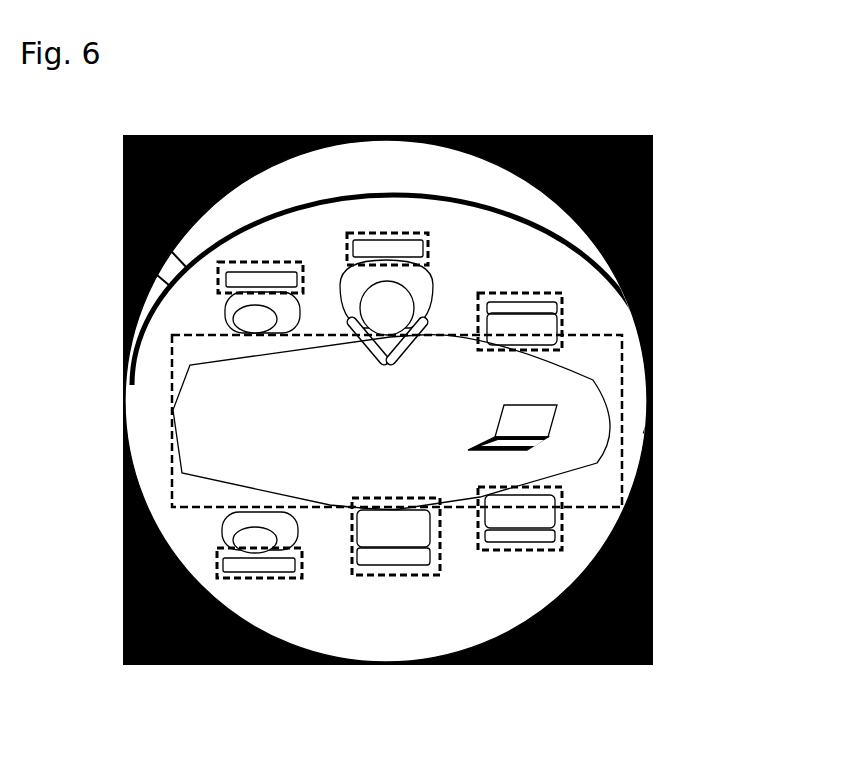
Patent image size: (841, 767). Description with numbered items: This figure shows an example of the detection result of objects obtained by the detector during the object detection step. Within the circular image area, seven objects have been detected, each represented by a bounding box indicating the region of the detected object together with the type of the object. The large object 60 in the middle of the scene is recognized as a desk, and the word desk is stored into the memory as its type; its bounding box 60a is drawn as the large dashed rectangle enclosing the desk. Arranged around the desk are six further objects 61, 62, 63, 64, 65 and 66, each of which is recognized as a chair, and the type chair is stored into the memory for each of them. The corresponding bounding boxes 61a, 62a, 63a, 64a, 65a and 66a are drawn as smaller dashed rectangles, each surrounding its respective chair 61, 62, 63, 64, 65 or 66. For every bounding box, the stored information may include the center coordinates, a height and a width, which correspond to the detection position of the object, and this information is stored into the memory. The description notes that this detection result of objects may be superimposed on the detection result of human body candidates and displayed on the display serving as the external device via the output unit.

The object (desk) 60 is at (603, 428).
The bounding box of the object 60 60a is at (625, 463).
The object (chair) 61 is at (522, 340).
The bounding box of the object 61 61a is at (477, 350).
The object (chair) 62 is at (415, 250).
The bounding box of the object 62 62a is at (428, 263).
The object (chair) 63 is at (263, 277).
The bounding box of the object 63 63a is at (242, 262).
The object (chair) 64 is at (282, 563).
The bounding box of the object 64 64a is at (237, 577).
The object (chair) 65 is at (383, 517).
The bounding box of the object 65 65a is at (423, 503).
The object (chair) 66 is at (543, 523).
The bounding box of the object 66 66a is at (495, 552).